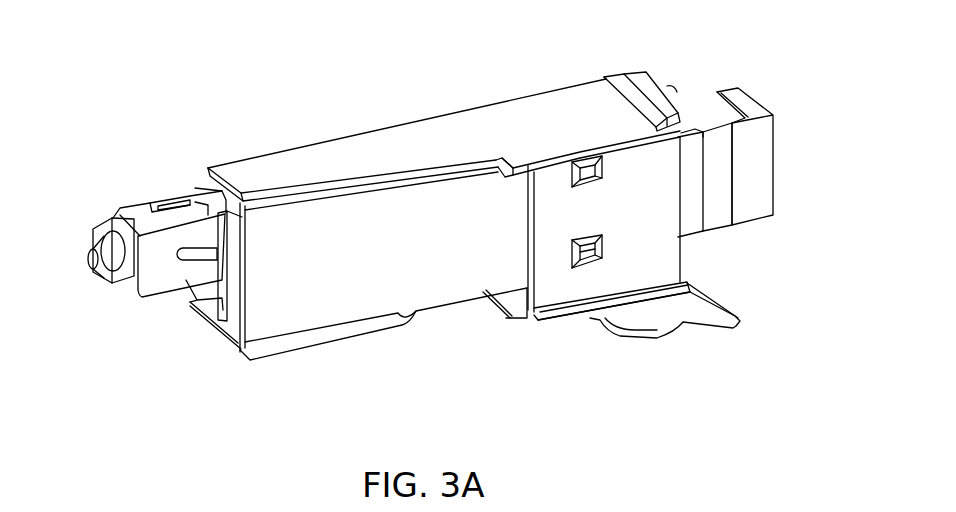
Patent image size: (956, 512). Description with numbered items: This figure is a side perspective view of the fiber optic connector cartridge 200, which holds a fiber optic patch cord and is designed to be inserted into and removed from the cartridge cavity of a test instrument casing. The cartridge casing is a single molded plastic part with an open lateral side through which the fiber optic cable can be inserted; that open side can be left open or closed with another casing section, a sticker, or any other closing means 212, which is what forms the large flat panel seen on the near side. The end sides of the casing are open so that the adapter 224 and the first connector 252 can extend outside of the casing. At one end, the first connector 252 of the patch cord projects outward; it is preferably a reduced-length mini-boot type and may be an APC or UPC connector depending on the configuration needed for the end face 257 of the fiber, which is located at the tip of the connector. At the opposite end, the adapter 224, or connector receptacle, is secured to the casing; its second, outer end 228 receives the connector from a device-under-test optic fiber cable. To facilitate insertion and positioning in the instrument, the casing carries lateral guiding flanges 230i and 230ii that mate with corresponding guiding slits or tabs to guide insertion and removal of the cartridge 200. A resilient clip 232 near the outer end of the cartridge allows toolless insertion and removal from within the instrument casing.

The fiber optic connector cartridge 200 is at (578, 352).
The closing means 212 is at (392, 263).
The adapter 224 is at (715, 203).
The second outer end 228 is at (785, 165).
The lateral guiding flange 230i is at (562, 322).
The lateral guiding flange 230ii is at (578, 143).
The resilient clip 232 is at (690, 320).
The first connector 252 is at (162, 273).
The end face 257 is at (88, 257).